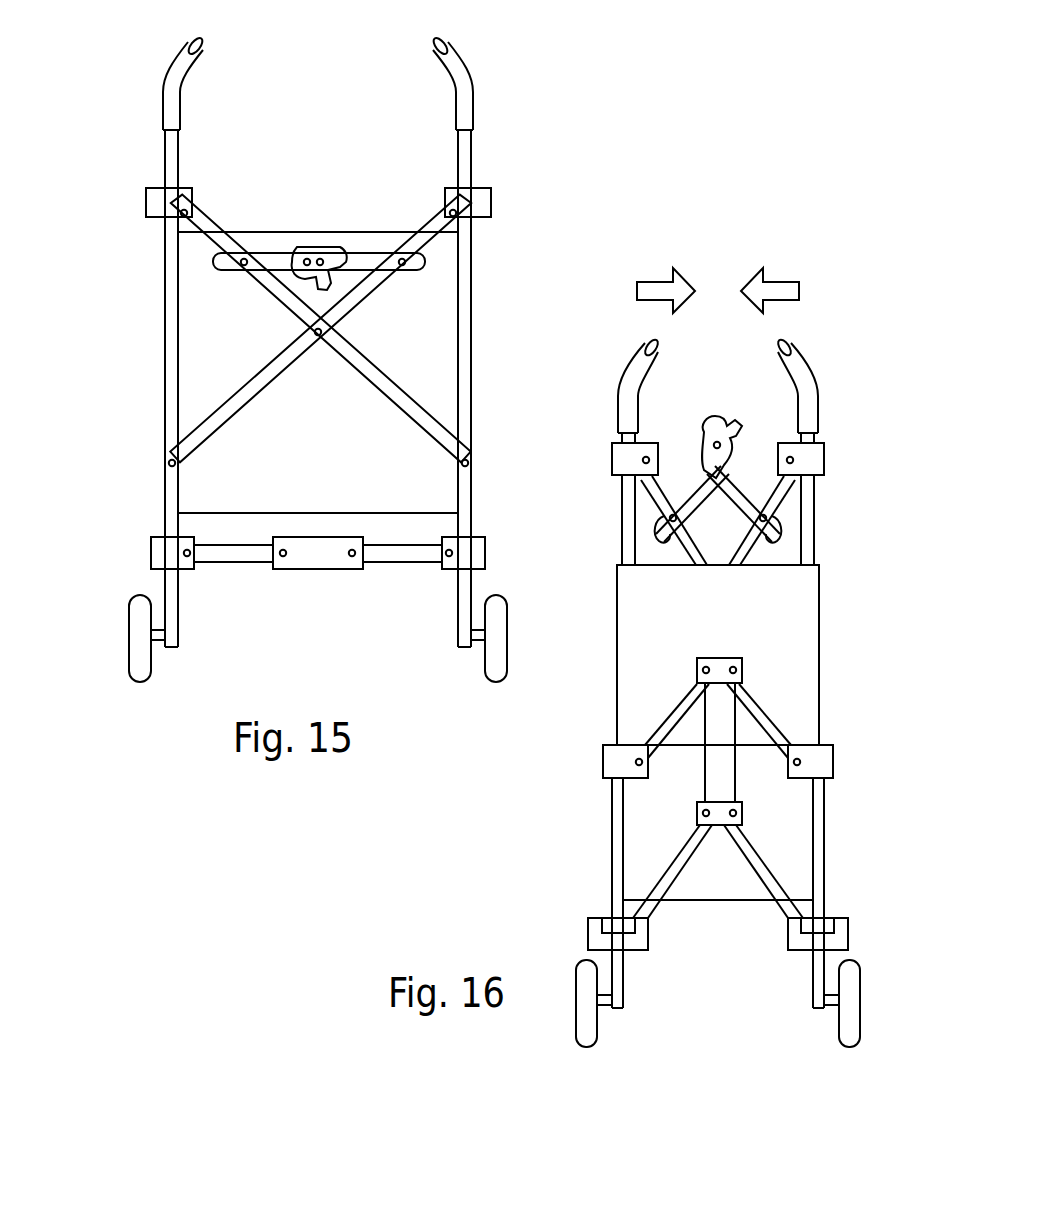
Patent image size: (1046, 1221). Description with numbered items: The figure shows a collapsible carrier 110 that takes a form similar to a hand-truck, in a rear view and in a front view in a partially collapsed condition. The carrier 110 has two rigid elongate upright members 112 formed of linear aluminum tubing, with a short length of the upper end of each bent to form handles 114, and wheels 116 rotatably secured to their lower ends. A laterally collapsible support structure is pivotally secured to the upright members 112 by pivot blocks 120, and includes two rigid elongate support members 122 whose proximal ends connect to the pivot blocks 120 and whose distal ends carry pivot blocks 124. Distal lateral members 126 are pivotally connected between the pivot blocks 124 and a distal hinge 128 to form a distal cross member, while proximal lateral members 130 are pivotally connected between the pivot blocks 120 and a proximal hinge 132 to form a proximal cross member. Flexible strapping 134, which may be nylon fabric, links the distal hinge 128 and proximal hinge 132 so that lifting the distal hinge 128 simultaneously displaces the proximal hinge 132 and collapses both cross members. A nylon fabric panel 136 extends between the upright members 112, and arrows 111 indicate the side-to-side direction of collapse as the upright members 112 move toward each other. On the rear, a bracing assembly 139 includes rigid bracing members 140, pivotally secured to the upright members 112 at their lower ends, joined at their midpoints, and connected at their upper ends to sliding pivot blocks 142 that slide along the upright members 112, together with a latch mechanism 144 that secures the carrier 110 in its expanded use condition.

In FIG. 15, the collapsible carrier 110 is at (88, 92).
In FIG. 16, the collapsible carrier 110 is at (528, 828).
In FIG. 16, the arrows 111 is at (748, 290).
In FIG. 15, the upright members 112 is at (172, 595).
In FIG. 16, the upright members 112 is at (718, 520).
In FIG. 15, the handles 114 is at (178, 98).
In FIG. 16, the handles 114 is at (718, 385).
In FIG. 15, the wheels 116 is at (136, 662).
In FIG. 16, the wheels 116 is at (582, 1015).
In FIG. 15, the pivot blocks 120 is at (150, 555).
In FIG. 16, the pivot blocks 120 is at (637, 945).
In FIG. 16, the support members 122 is at (615, 845).
In FIG. 16, the pivot blocks 124 is at (605, 760).
In FIG. 16, the distal lateral members 126 is at (672, 712).
In FIG. 16, the distal hinge 128 is at (720, 665).
In FIG. 15, the proximal lateral members 130 is at (235, 558).
In FIG. 16, the proximal lateral members 130 is at (672, 900).
In FIG. 15, the proximal hinge 132 is at (318, 572).
In FIG. 16, the proximal hinge 132 is at (742, 808).
In FIG. 16, the flexible strapping 134 is at (712, 765).
In FIG. 15, the nylon fabric panel 136 is at (216, 462).
In FIG. 16, the nylon fabric panel 136 is at (628, 683).
In FIG. 15, the bracing assembly 139 is at (416, 388).
In FIG. 15, the bracing members 140 is at (275, 298).
In FIG. 16, the bracing members 140 is at (755, 540).
In FIG. 15, the sliding pivot blocks 142 is at (150, 202).
In FIG. 16, the sliding pivot blocks 142 is at (613, 460).
In FIG. 15, the latch mechanism 144 is at (345, 258).
In FIG. 16, the latch mechanism 144 is at (713, 432).